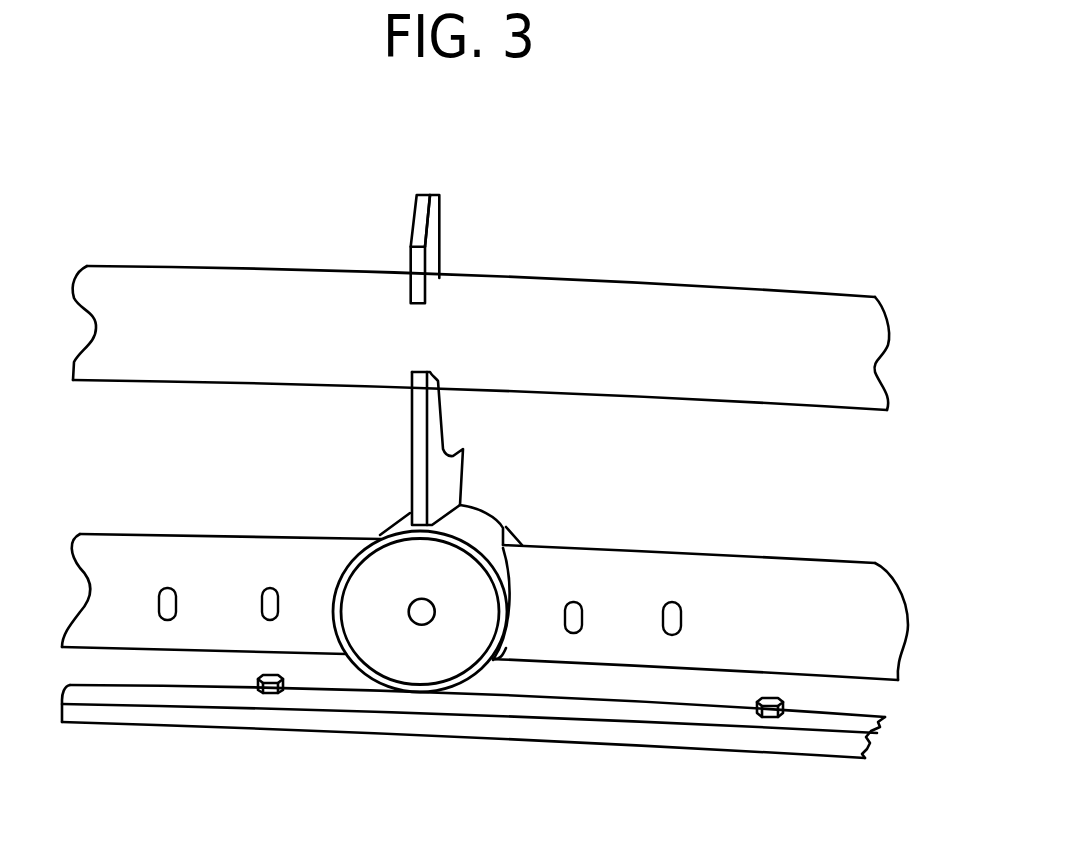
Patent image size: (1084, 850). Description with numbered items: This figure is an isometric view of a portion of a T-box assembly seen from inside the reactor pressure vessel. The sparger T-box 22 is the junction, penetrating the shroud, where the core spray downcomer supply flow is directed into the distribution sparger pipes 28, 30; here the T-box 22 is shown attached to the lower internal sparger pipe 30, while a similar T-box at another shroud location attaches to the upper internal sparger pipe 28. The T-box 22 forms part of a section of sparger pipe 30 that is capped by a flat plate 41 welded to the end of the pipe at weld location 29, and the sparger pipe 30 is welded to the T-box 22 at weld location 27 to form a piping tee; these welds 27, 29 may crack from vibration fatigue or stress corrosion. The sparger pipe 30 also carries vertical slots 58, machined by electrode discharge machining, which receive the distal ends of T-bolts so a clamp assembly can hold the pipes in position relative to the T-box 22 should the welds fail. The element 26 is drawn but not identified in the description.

The sparger T-box 22 is at (385, 536).
The tab 26 is at (427, 291).
The weld location 27 is at (503, 545).
The upper internal sparger pipe 28 is at (683, 310).
The weld location 29 is at (473, 667).
The lower internal sparger pipe 30 is at (720, 580).
The flat plate 41 is at (412, 665).
The vertical slots 58 is at (270, 607).